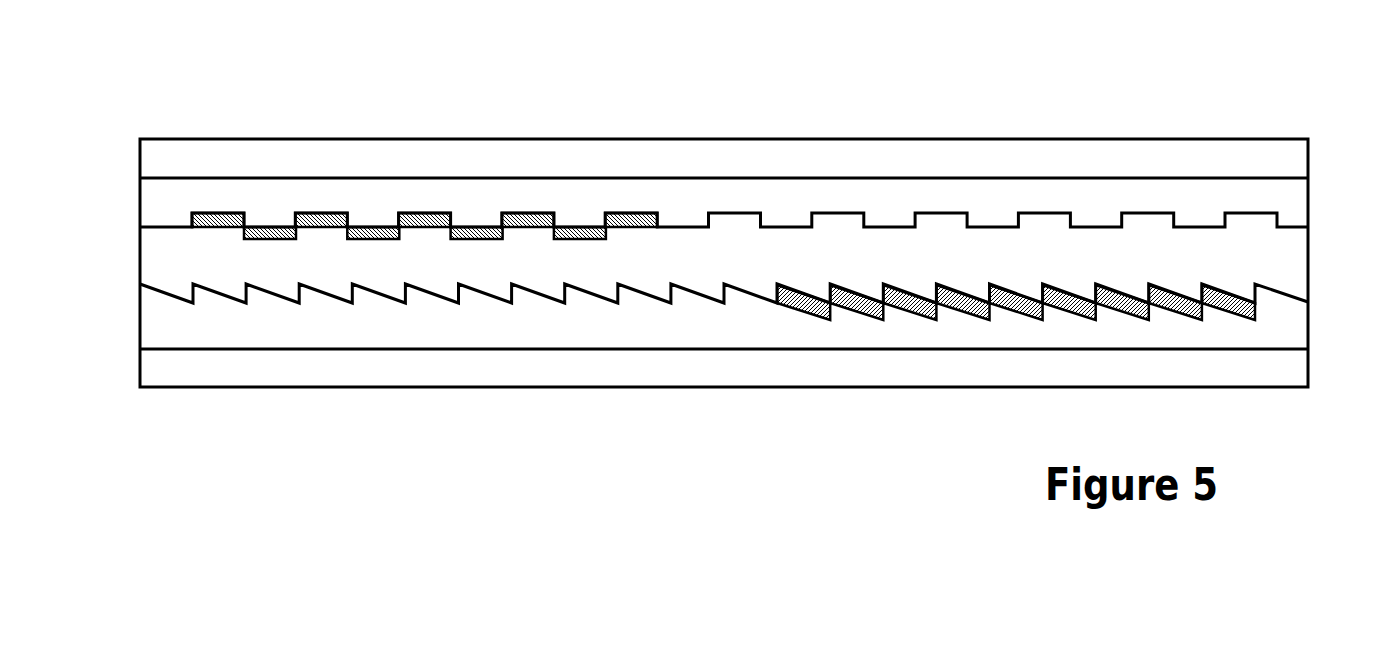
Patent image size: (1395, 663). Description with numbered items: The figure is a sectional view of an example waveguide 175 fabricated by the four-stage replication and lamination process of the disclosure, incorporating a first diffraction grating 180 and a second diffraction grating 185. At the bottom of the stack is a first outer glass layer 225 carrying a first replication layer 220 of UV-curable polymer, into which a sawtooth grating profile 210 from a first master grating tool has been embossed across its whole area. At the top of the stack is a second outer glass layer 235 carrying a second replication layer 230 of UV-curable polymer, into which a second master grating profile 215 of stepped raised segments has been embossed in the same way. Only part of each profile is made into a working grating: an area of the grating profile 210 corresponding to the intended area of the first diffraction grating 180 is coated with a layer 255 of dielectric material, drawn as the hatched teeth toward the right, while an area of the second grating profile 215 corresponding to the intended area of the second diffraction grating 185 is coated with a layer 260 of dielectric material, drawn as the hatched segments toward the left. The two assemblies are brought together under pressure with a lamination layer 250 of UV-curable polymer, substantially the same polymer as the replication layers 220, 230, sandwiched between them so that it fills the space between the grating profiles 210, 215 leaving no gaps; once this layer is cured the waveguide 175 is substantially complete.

The waveguide 175 is at (699, 105).
The second outer glass layer 235 is at (148, 160).
The second replication layer 230 is at (1289, 197).
The second diffraction grating 185 is at (374, 201).
The second master grating profile 215 is at (942, 212).
The layer of dielectric material 260 is at (376, 240).
The lamination layer 250 is at (1297, 264).
The grating profile 210 is at (172, 298).
The layer of dielectric material 255 is at (852, 315).
The first diffraction grating 180 is at (955, 326).
The first replication layer 220 is at (1295, 323).
The first outer glass layer 225 is at (1295, 362).